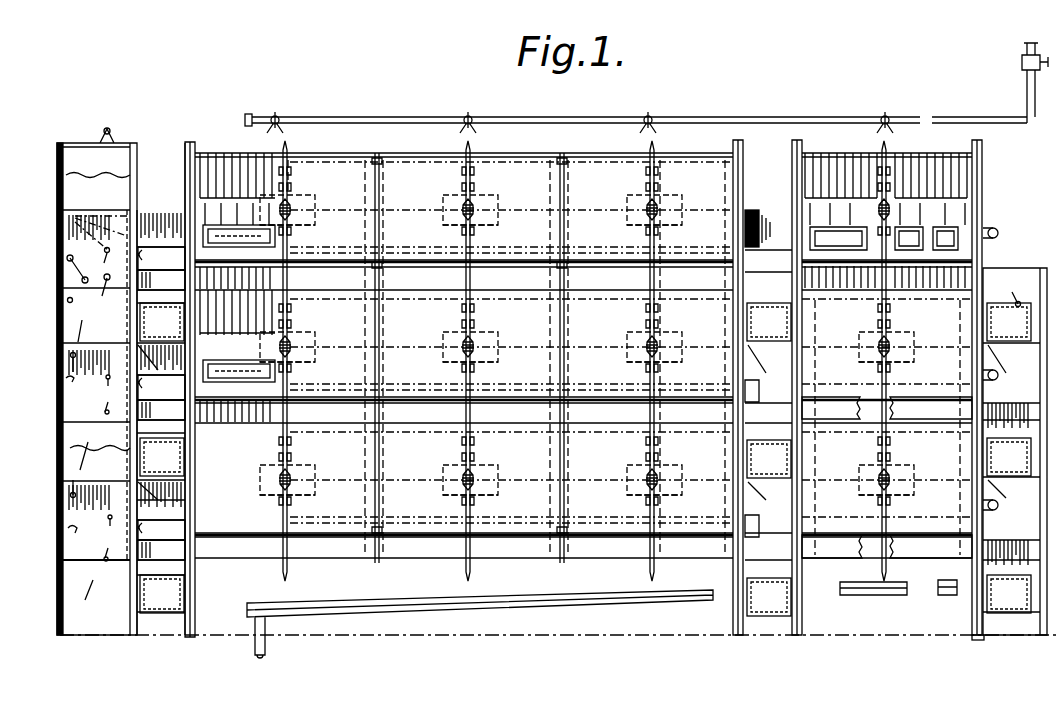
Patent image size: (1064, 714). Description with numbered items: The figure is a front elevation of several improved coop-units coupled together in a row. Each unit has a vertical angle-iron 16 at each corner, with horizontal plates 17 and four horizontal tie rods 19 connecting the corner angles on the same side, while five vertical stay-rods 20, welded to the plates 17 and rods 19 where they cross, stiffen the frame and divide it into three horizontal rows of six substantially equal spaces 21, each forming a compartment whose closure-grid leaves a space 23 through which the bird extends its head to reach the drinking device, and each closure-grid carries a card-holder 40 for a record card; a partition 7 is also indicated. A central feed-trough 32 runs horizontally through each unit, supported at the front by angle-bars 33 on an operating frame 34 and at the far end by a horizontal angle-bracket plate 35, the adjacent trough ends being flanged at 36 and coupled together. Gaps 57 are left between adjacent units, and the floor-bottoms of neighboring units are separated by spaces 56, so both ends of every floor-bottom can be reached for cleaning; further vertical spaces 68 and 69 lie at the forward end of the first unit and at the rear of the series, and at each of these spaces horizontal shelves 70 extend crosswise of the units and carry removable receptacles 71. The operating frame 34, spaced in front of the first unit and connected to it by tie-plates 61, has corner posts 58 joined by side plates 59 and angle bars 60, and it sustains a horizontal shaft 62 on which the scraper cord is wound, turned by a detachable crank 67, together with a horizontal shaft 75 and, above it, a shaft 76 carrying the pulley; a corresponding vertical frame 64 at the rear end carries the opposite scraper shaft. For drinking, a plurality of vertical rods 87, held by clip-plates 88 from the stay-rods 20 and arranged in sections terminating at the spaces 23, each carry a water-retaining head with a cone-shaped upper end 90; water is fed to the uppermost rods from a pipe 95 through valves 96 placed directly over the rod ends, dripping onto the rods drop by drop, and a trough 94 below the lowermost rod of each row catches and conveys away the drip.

The partition 7 is at (420, 162).
The vertical angle-iron 16 is at (192, 143).
The horizontal plate 17 is at (535, 293).
The horizontal tie rod 19 is at (426, 163).
The stay-rod 20 is at (375, 153).
The space 21 is at (564, 341).
The space 23 is at (685, 212).
The central feed-trough 32 is at (332, 482).
The angle-bar 33 is at (161, 394).
The operating frame 34 is at (98, 312).
The horizontal angle-bracket plate 35 is at (999, 232).
The flange 36 is at (756, 213).
The card-holder 40 is at (278, 238).
The space 56 is at (768, 357).
The gap or space 57 is at (748, 655).
The corner post 58 is at (66, 607).
The side plate 59 is at (87, 451).
The angle bar 60 is at (100, 143).
The tie-plate 61 is at (161, 415).
The horizontal shaft 62 is at (100, 405).
The vertical frame 64 is at (1034, 268).
The detachable crank 67 is at (66, 260).
The vertical space 68 is at (165, 646).
The vertical space 69 is at (978, 642).
The horizontal shelf 70 is at (136, 352).
The removable receptacle 71 is at (750, 603).
The horizontal shaft 75 is at (66, 380).
The shaft 76 is at (72, 218).
The vertical rod 87 is at (288, 147).
The clip-plate 88 is at (292, 172).
The cone-shaped upper end 90 is at (460, 209).
The trough 94 is at (370, 603).
The pipe 95 is at (418, 117).
The valve 96 is at (283, 114).